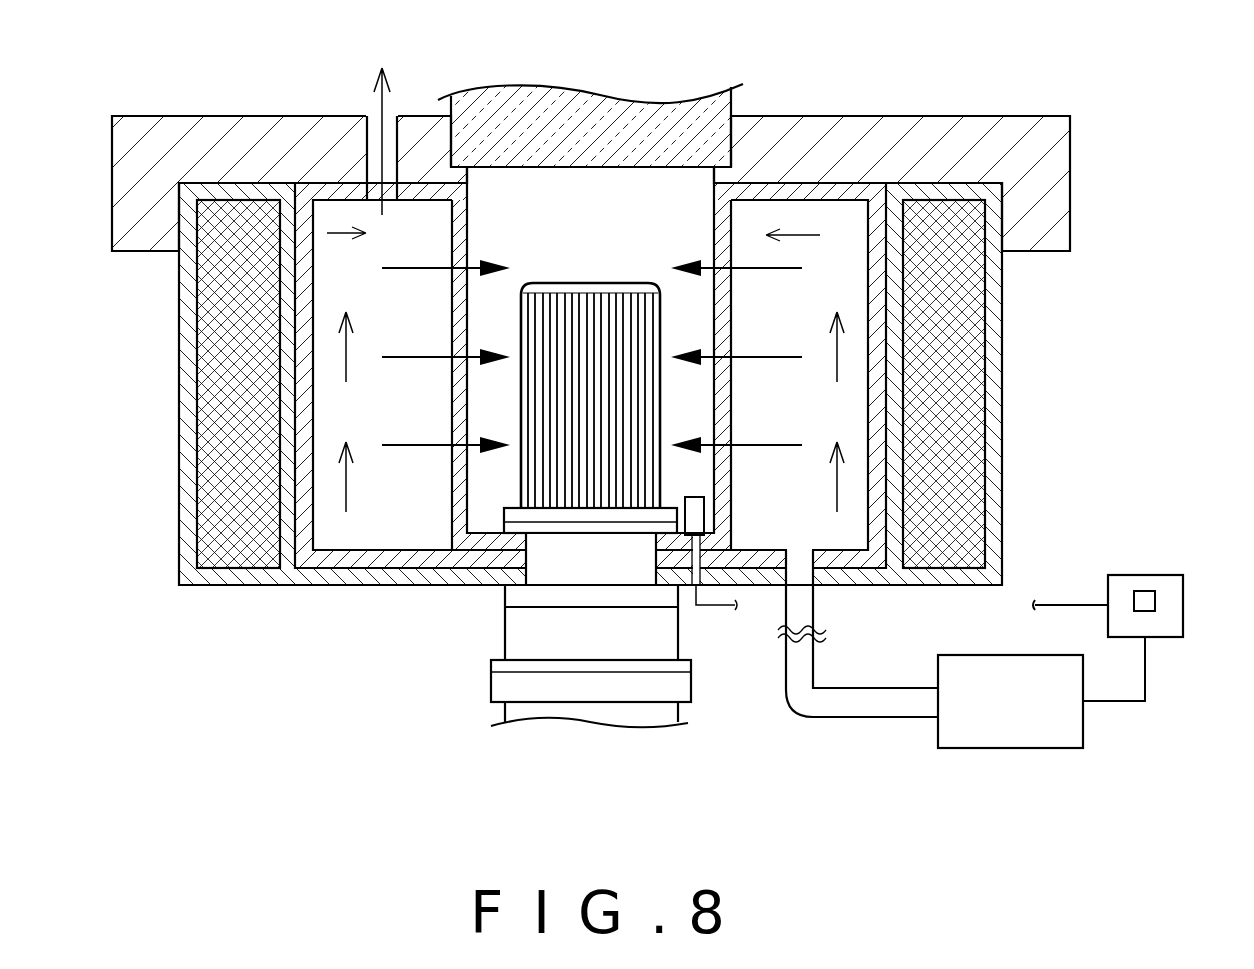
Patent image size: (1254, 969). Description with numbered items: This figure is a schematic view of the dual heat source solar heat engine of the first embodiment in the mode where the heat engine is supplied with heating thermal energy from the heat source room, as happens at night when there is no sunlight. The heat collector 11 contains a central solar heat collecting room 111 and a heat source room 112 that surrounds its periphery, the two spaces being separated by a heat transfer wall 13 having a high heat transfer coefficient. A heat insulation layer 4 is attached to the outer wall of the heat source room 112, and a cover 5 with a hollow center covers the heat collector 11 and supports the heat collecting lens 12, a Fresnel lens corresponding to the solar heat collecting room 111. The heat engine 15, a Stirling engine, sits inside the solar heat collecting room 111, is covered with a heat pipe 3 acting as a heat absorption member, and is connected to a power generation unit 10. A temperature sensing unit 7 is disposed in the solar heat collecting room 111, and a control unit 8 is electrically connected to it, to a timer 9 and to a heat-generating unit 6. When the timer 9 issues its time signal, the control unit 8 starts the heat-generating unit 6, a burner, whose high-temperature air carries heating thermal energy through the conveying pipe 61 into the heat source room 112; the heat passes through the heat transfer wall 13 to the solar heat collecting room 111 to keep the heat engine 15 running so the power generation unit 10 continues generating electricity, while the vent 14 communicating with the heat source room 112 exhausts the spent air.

The heat pipe 3 is at (637, 288).
The heat insulation layer 4 is at (222, 318).
The cover 5 is at (235, 127).
The heat-generating unit 6 is at (1025, 725).
The conveying pipe 61 is at (868, 700).
The temperature sensing unit 7 is at (698, 515).
The control unit 8 is at (1172, 620).
The timer 9 is at (1157, 600).
The power generation unit 10 is at (577, 705).
The heat collector 11 is at (385, 558).
The solar heat collecting room 111 is at (495, 392).
The heat source room 112 is at (362, 518).
The heat collecting lens 12 is at (528, 125).
The heat transfer wall 13 is at (460, 480).
The vent 14 is at (373, 130).
The heat engine 15 is at (585, 525).